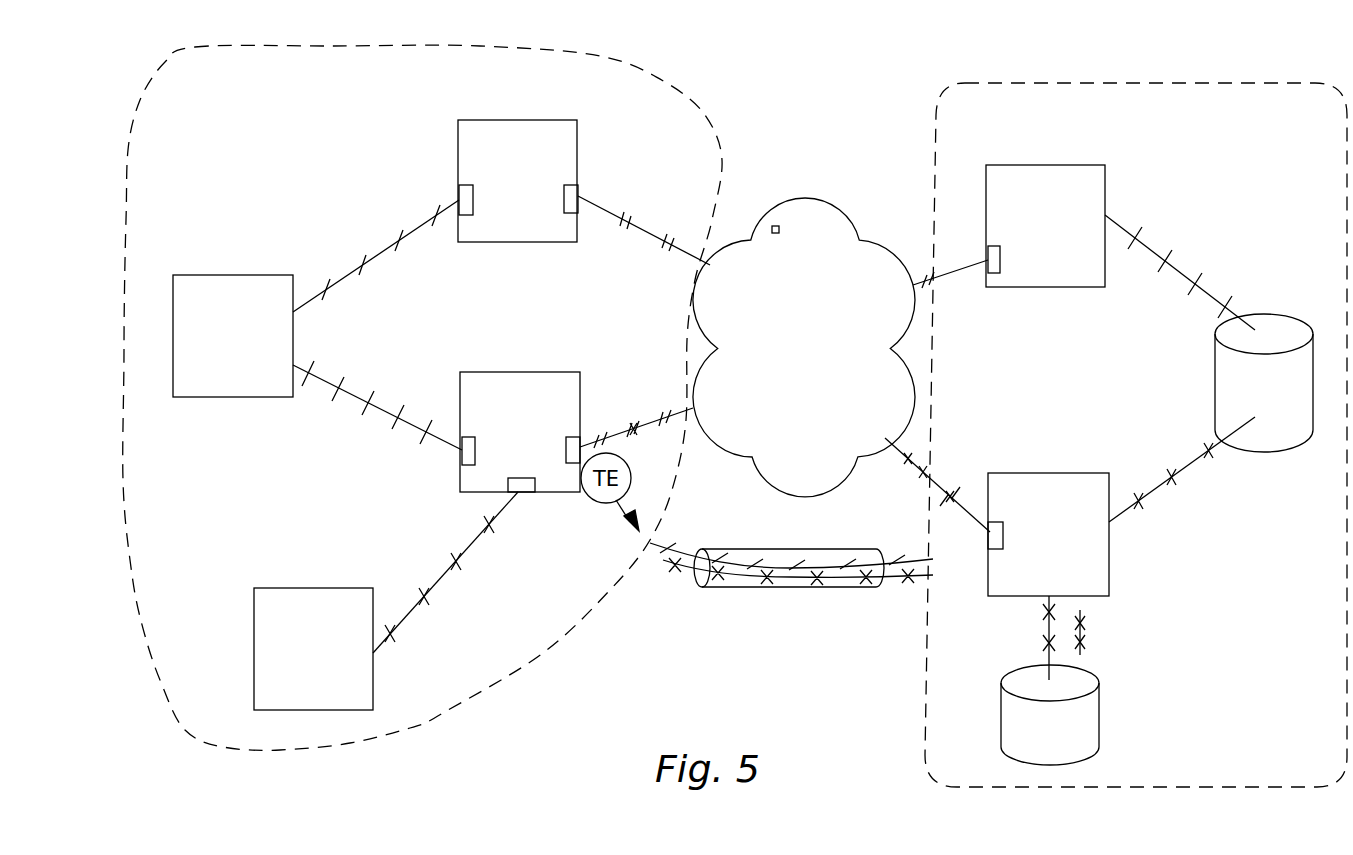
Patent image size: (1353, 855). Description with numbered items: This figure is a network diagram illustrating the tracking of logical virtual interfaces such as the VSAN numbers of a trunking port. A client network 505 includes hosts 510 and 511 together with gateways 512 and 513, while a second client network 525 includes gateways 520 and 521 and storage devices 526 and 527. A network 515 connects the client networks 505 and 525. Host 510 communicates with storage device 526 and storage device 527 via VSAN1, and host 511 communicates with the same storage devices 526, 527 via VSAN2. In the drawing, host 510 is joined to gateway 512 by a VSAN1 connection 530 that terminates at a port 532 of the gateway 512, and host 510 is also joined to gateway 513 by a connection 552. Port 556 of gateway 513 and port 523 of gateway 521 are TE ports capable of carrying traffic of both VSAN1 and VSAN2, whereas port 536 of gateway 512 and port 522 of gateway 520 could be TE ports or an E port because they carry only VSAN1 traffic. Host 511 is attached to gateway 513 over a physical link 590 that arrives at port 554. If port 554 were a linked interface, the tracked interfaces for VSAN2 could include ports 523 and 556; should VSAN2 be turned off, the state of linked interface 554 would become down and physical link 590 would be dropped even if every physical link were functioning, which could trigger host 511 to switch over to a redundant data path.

The client network 505 is at (200, 75).
The host 510 is at (232, 285).
The host 511 is at (276, 597).
The gateway 512 is at (518, 128).
The gateway 513 is at (521, 378).
The network 515 is at (775, 226).
The gateway 520 is at (1042, 165).
The gateway 521 is at (1043, 473).
The port 522 is at (986, 268).
The port 523 is at (986, 548).
The client network 525 is at (1165, 105).
The storage device 526 is at (1080, 672).
The storage device 527 is at (1282, 436).
The link (VSAN1) 530 is at (386, 252).
The port 532 is at (464, 193).
The port 536 is at (570, 205).
The port 552 is at (467, 438).
The port 554 is at (510, 488).
The port 556 is at (580, 435).
The physical link 590 is at (440, 579).